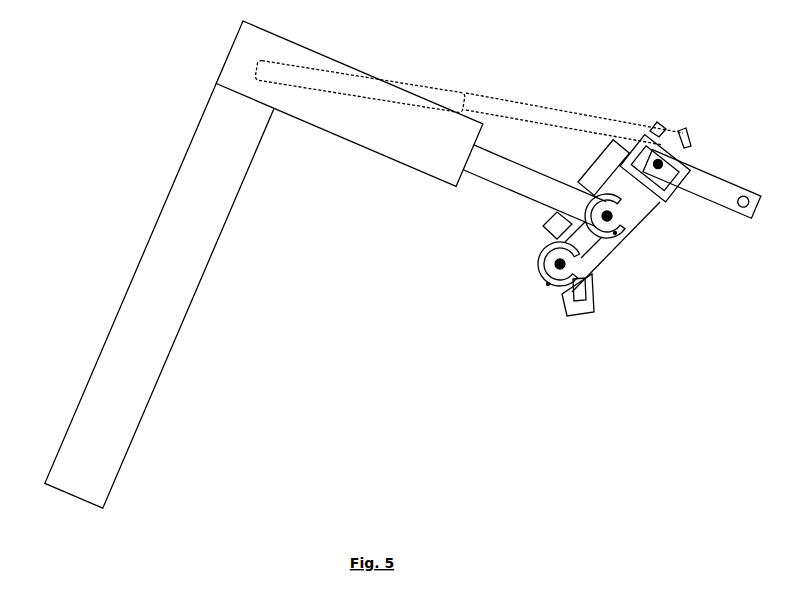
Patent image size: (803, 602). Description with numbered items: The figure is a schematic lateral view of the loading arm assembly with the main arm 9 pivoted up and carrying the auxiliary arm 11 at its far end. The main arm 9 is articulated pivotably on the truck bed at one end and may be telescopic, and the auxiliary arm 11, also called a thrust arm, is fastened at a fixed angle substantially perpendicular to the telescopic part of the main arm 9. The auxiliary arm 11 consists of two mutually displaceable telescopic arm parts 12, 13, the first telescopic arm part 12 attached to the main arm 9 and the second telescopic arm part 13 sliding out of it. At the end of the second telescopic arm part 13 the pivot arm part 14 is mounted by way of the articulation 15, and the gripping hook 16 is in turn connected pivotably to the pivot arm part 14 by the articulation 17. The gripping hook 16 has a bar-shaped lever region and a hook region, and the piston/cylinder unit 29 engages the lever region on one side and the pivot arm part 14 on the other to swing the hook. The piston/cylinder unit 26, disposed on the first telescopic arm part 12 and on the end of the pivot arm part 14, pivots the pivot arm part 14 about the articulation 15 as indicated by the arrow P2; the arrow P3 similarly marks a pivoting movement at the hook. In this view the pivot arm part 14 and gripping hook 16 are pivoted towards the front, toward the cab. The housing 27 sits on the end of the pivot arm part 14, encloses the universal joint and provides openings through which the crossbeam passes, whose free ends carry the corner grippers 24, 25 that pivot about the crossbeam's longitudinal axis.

The main arm 9 is at (183, 267).
The auxiliary arm 11 is at (411, 130).
The first telescopic arm part 12 is at (355, 132).
The second telescopic arm part 13 is at (506, 187).
The pivot arm part 14 is at (592, 250).
The articulation 15 is at (612, 218).
The gripping hook 16 is at (583, 308).
The articulation 17 is at (557, 265).
The corner gripper 24 is at (702, 204).
The corner gripper 25 is at (723, 197).
The piston/cylinder unit 26 is at (492, 110).
The housing 27 is at (682, 162).
The piston/cylinder unit 29 is at (597, 157).
The arrow P2 is at (615, 233).
The pivot point P3 is at (548, 284).